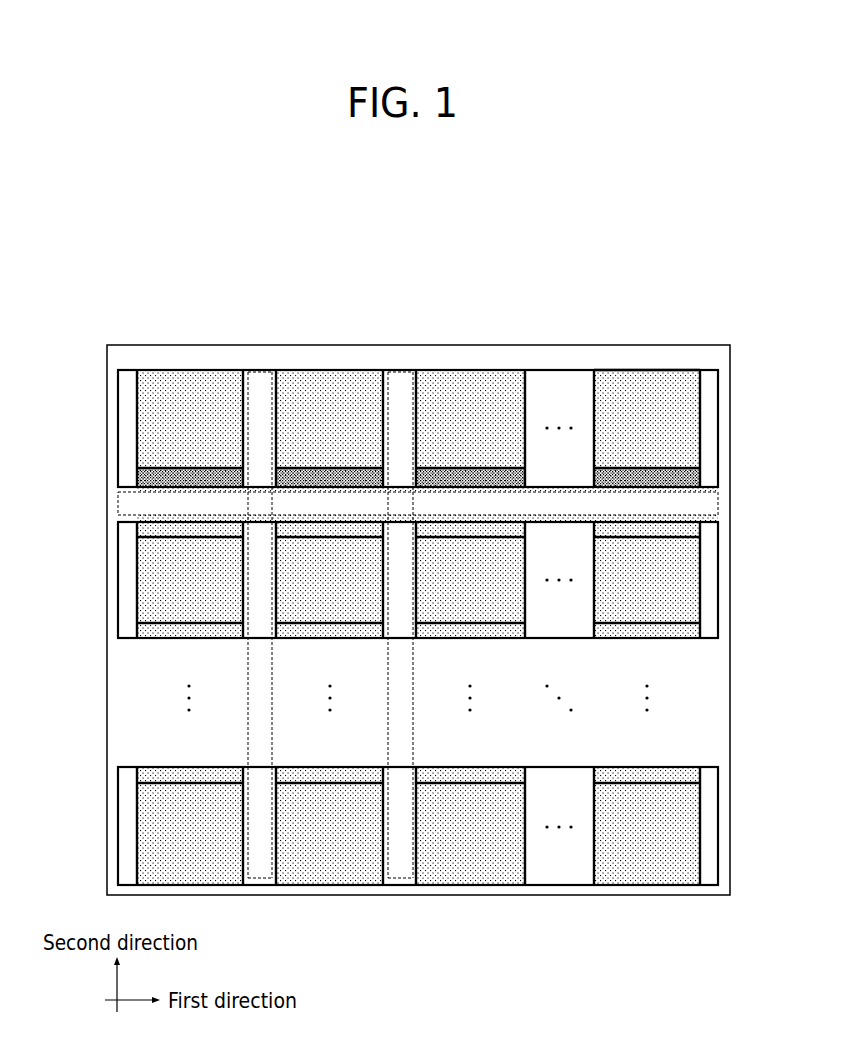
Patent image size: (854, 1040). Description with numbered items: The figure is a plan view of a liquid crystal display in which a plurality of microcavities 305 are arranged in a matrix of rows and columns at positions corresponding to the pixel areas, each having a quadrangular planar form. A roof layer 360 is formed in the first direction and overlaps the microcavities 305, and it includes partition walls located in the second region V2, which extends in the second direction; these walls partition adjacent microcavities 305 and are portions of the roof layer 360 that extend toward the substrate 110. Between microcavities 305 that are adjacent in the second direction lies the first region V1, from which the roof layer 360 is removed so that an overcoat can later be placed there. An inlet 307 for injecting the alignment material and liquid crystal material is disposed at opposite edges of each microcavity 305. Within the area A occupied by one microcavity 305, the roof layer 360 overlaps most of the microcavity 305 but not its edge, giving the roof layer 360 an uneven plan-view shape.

The substrate 110 is at (492, 345).
The microcavity 305 is at (178, 400).
The inlet 307 is at (162, 526).
The roof layer 360 is at (118, 437).
The first region V1 is at (118, 504).
The second region V2 is at (262, 372).
The area A is at (645, 370).